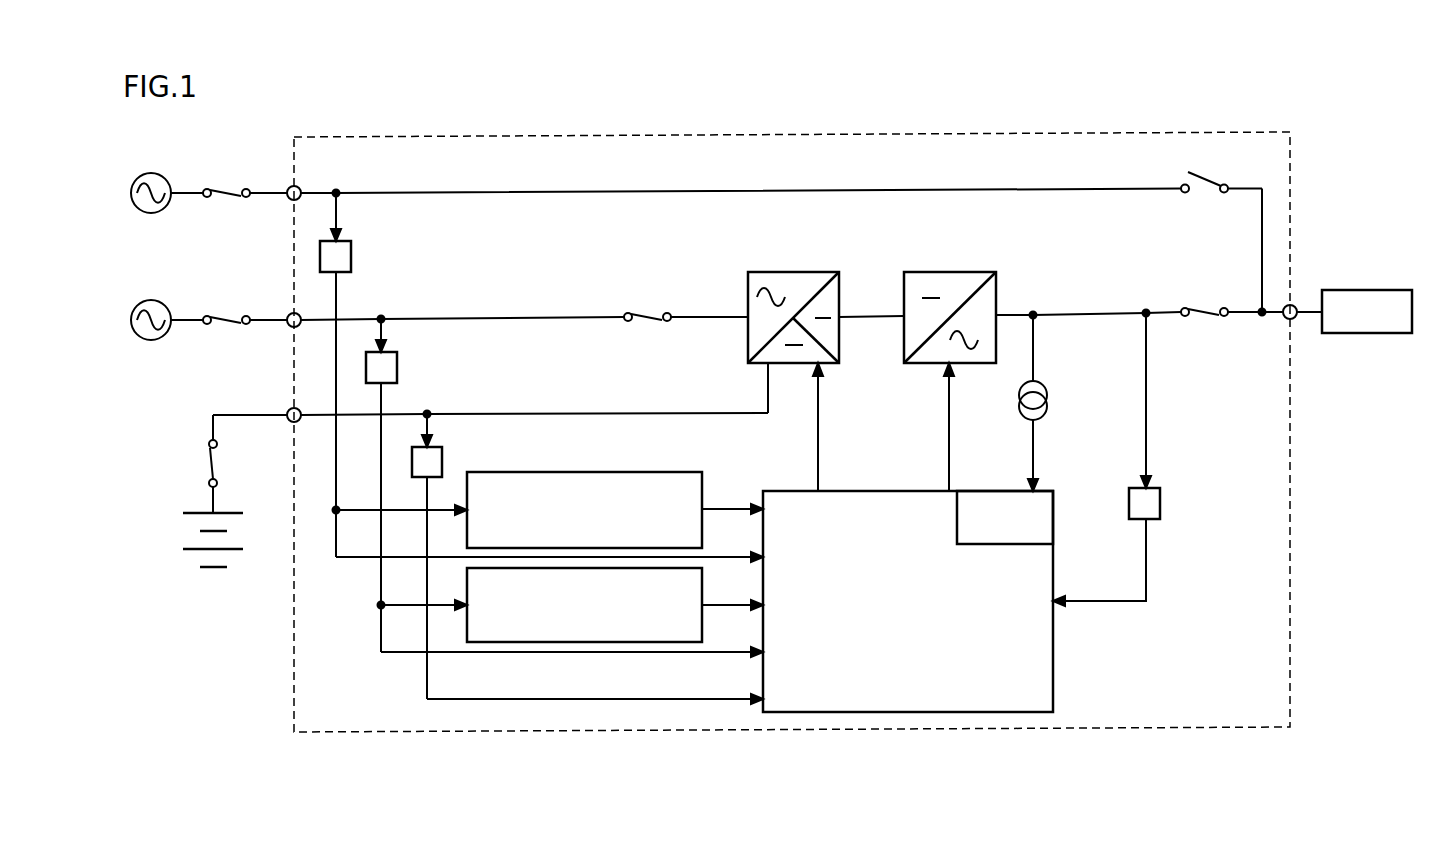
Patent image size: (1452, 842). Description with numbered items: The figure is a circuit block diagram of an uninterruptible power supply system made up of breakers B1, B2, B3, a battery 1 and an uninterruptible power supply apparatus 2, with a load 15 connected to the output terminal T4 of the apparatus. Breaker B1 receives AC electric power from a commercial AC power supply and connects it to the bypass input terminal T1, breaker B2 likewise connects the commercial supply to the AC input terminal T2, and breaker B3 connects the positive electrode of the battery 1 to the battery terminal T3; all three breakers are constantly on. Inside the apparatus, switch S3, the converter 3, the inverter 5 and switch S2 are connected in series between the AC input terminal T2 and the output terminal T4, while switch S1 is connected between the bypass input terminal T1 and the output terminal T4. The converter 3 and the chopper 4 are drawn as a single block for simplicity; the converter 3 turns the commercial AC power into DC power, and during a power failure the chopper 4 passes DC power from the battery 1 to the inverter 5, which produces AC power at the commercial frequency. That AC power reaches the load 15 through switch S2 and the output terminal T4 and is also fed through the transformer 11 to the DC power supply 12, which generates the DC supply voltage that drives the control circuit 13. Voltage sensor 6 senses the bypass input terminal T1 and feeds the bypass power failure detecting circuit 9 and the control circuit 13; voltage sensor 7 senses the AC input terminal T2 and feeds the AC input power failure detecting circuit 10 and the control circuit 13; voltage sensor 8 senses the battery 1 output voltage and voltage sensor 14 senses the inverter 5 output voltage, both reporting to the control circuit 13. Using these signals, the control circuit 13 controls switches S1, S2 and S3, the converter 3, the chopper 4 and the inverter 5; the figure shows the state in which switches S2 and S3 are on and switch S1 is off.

The battery 1 is at (228, 512).
The uninterruptible power supply apparatus 2 is at (1250, 132).
The converter 3 is at (760, 272).
The chopper 4 is at (790, 366).
The inverter 5 is at (947, 272).
The voltage sensor 6 is at (352, 258).
The voltage sensor 7 is at (398, 367).
The voltage sensor 8 is at (442, 460).
The bypass power failure detecting circuit 9 is at (702, 480).
The AC input power failure detecting circuit 10 is at (702, 575).
The transformer 11 is at (1047, 404).
The DC power supply 12 is at (1053, 508).
The control circuit 13 is at (1053, 668).
The voltage sensor 14 is at (1160, 503).
The load 15 is at (1370, 290).
The breaker B1 is at (226, 188).
The breaker B2 is at (226, 315).
The breaker B3 is at (210, 463).
The bypass input terminal T1 is at (289, 200).
The AC input terminal T2 is at (289, 327).
The battery terminal T3 is at (288, 421).
The output terminal T4 is at (1294, 305).
The switch S1 is at (1205, 172).
The switch S2 is at (1205, 308).
The switch S3 is at (645, 311).